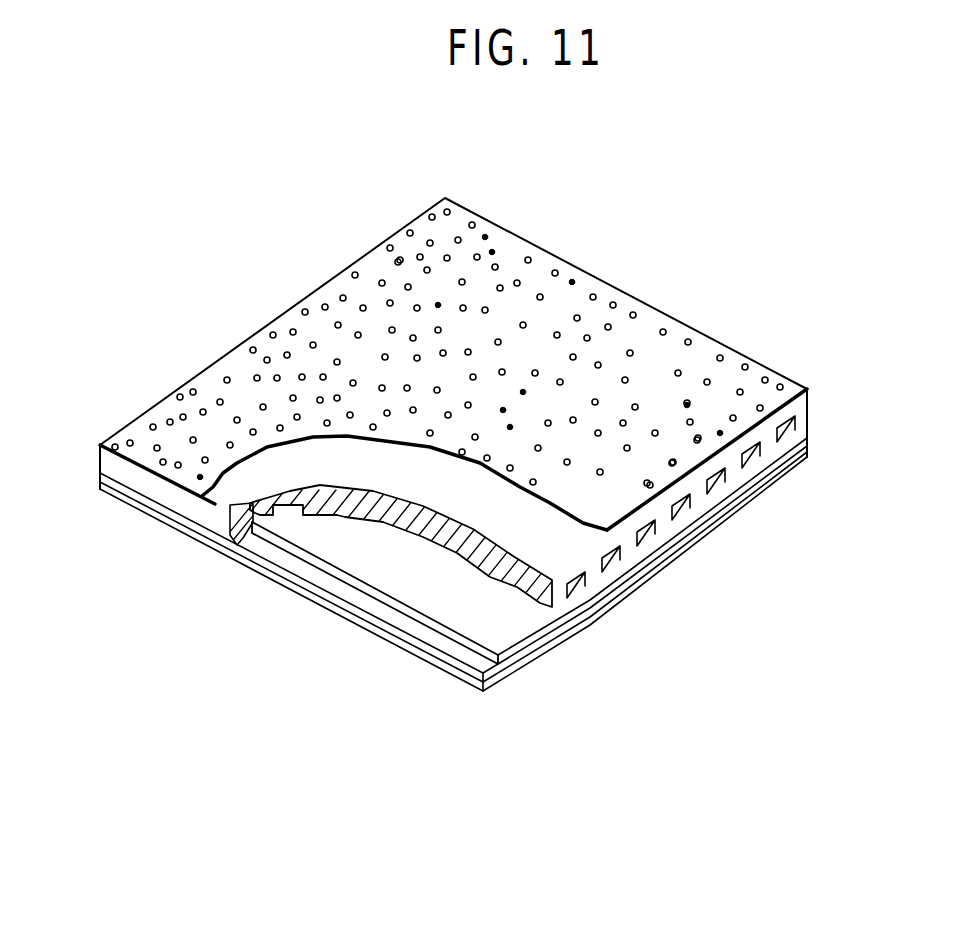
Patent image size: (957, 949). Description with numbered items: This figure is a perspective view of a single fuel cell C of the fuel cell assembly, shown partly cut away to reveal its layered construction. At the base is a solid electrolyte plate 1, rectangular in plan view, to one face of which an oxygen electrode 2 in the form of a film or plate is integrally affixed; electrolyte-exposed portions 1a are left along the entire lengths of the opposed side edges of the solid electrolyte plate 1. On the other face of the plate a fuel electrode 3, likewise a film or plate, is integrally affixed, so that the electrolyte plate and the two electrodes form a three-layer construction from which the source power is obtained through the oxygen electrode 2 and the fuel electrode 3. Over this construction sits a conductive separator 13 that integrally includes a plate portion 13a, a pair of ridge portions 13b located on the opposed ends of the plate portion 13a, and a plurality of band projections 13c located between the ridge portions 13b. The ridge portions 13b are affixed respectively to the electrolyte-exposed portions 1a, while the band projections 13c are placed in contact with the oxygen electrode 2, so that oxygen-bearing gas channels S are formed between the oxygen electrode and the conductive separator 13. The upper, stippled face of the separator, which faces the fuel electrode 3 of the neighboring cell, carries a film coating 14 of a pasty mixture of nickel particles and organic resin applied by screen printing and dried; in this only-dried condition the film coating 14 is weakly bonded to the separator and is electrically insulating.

The fuel cell C is at (410, 220).
The film coating 14 is at (605, 297).
The conductive separator 13 is at (147, 479).
The plate portion 13a is at (750, 438).
The ridge portions 13b is at (808, 418).
The band projections 13c is at (741, 468).
The oxygen-bearing gas channel S is at (617, 573).
The solid electrolyte plate 1 is at (508, 660).
The electrolyte-exposed portions 1a is at (455, 647).
The oxygen electrode 2 is at (508, 627).
The fuel electrode 3 is at (492, 692).